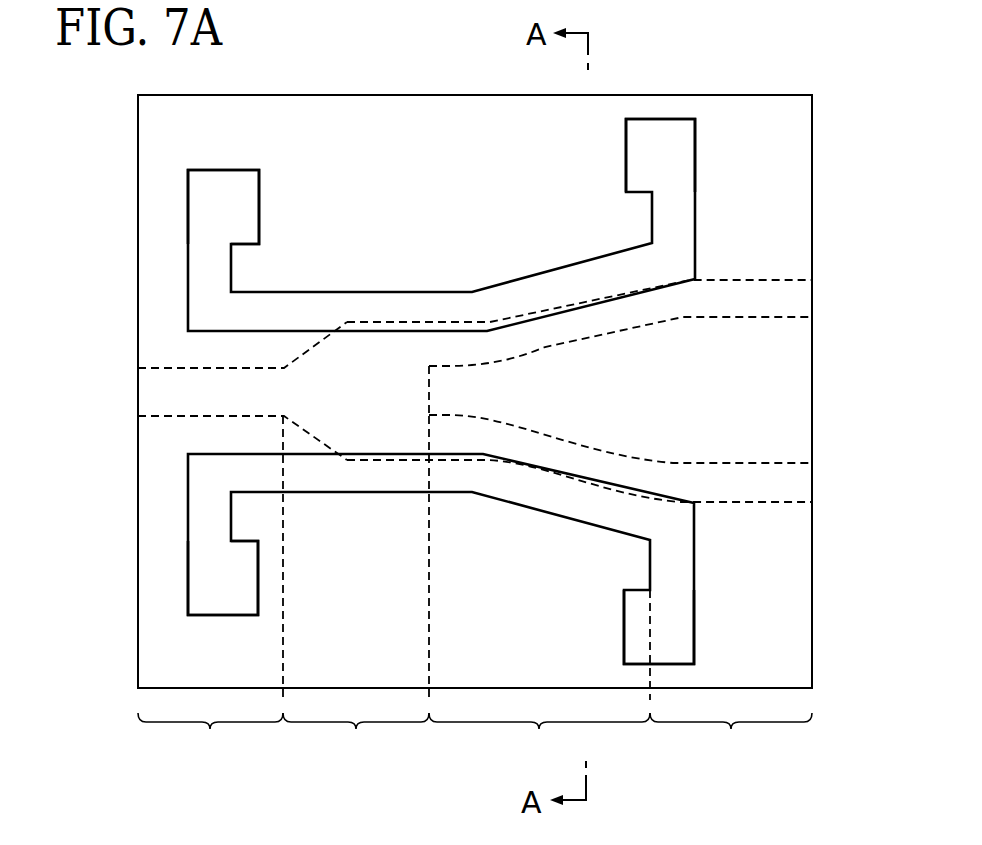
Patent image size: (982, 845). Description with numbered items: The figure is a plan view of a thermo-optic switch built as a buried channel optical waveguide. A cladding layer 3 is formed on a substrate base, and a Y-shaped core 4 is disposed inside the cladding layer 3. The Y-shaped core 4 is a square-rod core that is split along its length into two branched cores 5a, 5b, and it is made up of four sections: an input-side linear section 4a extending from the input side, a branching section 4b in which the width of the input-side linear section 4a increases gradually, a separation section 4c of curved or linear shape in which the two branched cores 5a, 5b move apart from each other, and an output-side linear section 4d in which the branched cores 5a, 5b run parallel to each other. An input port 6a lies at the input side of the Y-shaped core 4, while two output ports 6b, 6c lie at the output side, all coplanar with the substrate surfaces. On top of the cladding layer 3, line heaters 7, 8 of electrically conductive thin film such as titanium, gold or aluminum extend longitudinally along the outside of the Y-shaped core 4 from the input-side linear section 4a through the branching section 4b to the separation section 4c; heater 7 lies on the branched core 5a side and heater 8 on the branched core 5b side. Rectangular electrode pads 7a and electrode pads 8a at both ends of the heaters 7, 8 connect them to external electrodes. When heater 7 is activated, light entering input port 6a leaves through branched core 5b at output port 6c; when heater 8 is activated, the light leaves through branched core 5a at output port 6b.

The cladding layer 3 is at (793, 133).
The Y-shaped core 4 is at (742, 278).
The input-side linear section 4a is at (210, 590).
The branching section 4b is at (356, 590).
The separation section 4c is at (539, 677).
The output-side linear section 4d is at (731, 738).
The branched core 5a is at (797, 290).
The branched core 5b is at (786, 490).
The input port 6a is at (157, 392).
The output port 6b is at (805, 297).
The output port 6c is at (800, 486).
The line heater 7 is at (220, 174).
The electrode pads 7a is at (259, 207).
The line heater 8 is at (187, 587).
The electrode pads 8a is at (220, 585).